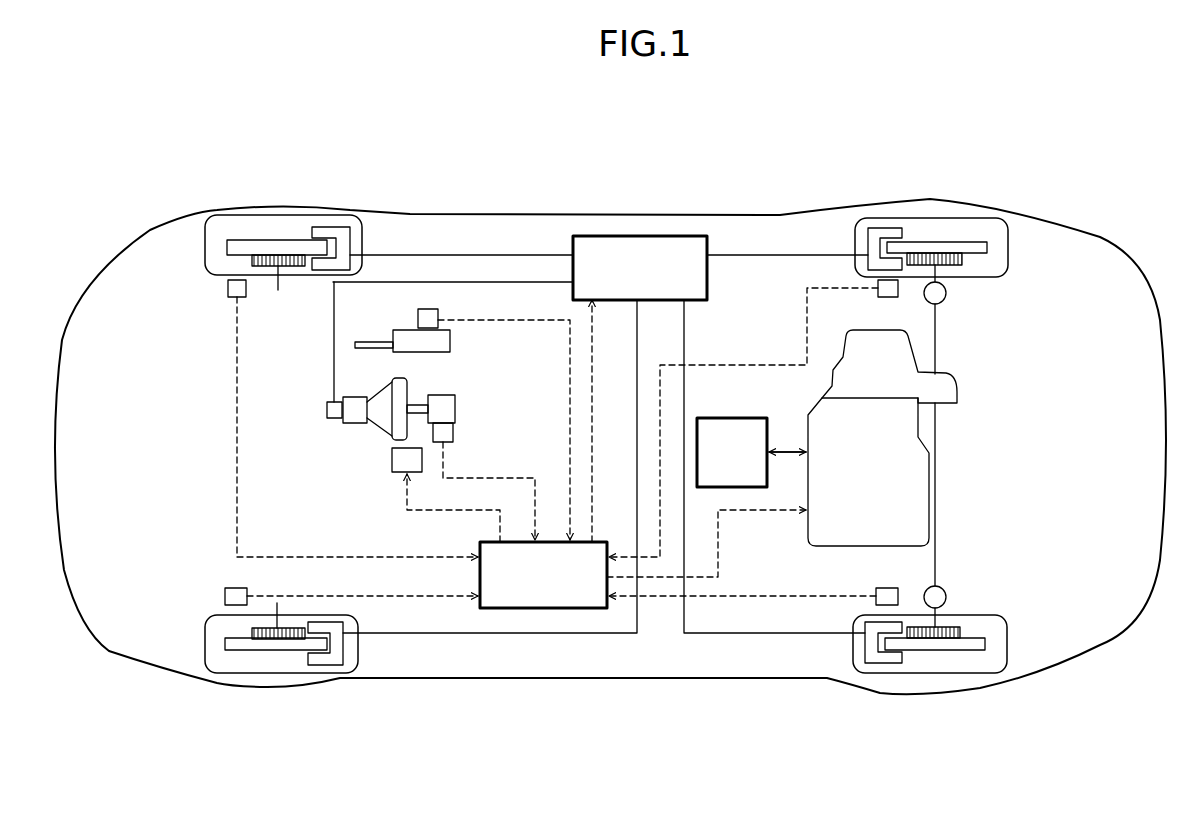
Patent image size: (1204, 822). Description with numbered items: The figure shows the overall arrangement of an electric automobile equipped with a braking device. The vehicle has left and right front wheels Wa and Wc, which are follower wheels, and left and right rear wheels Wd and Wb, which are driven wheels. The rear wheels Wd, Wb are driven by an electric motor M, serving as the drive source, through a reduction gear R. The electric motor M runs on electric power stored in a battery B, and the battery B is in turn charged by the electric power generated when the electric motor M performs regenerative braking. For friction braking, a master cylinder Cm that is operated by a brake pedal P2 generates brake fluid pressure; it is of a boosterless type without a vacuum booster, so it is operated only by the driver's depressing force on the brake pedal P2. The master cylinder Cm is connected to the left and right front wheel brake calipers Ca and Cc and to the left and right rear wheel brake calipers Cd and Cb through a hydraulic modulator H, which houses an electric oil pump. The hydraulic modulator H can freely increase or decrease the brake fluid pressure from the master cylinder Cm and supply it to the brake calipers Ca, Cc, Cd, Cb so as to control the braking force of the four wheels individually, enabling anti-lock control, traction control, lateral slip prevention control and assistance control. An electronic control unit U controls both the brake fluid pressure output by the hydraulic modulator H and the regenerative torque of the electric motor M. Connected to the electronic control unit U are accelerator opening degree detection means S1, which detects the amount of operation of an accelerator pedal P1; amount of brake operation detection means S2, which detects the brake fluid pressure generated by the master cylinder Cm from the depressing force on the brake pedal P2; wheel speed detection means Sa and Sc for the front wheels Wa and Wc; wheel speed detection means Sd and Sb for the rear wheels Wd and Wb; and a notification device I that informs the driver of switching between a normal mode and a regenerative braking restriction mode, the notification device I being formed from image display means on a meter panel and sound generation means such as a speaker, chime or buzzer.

The left front wheel Wa is at (262, 675).
The right rear wheel Wb is at (934, 217).
The right front wheel Wc is at (248, 216).
The left rear wheel Wd is at (920, 674).
The left front wheel brake caliper Ca is at (338, 683).
The right rear wheel brake caliper Cb is at (878, 227).
The right front wheel brake caliper Cc is at (326, 228).
The left rear wheel brake caliper Cd is at (880, 667).
The wheel speed detection means Sa is at (239, 596).
The wheel speed detection means Sb is at (893, 298).
The wheel speed detection means Sc is at (245, 293).
The wheel speed detection means Sd is at (884, 589).
The accelerator opening degree detection means S1 is at (419, 318).
The amount of brake operation detection means S2 is at (447, 432).
The accelerator pedal P1 is at (420, 345).
The brake pedal P2 is at (456, 411).
The master cylinder Cm is at (340, 418).
The notification device I is at (392, 463).
The hydraulic modulator H is at (629, 284).
The electronic control unit U is at (532, 592).
The battery B is at (721, 469).
The electric motor M is at (856, 491).
The reduction gear R is at (867, 378).